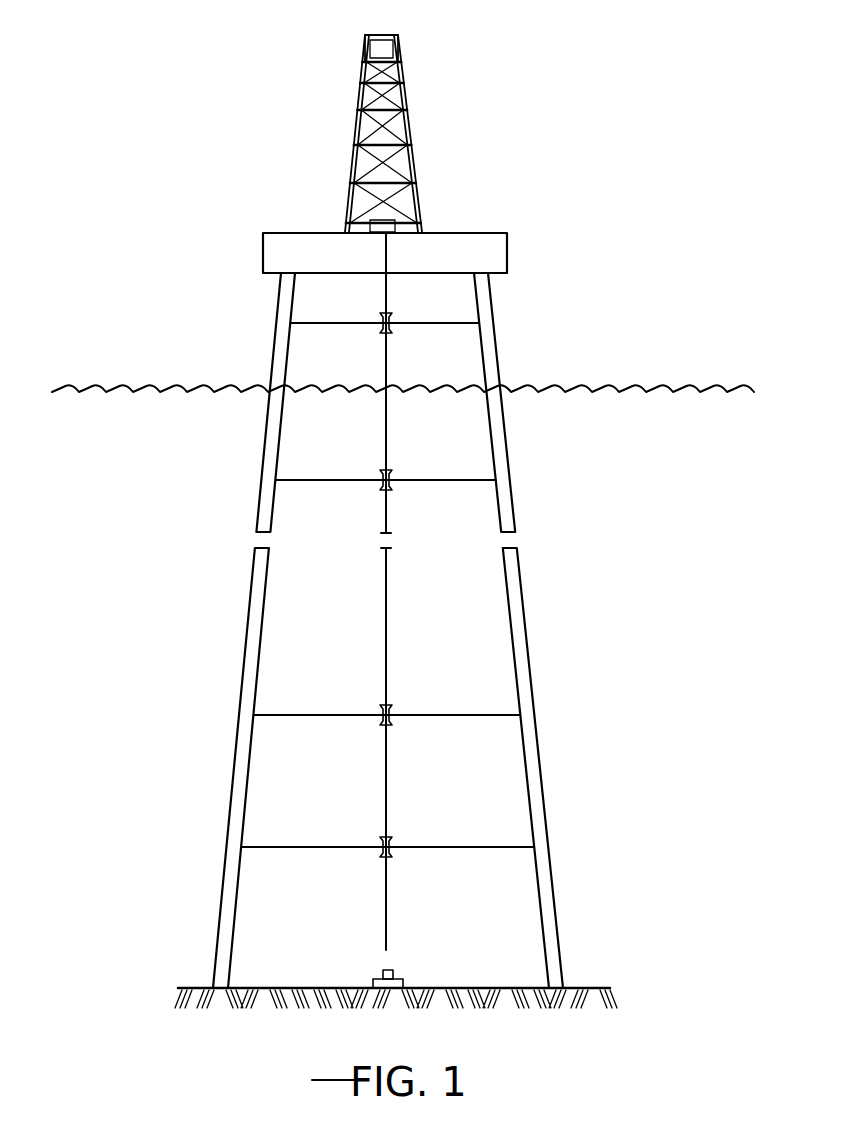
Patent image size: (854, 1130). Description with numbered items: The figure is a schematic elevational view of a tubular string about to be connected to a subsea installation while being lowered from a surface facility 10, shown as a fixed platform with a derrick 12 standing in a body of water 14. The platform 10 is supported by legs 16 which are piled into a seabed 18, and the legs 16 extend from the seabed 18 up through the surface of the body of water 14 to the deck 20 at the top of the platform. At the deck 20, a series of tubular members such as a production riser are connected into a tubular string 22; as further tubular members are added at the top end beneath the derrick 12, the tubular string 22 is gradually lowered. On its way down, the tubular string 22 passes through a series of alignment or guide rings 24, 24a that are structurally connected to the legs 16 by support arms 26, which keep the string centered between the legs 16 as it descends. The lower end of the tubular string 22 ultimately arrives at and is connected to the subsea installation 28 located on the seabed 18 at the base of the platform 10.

The surface facility 10 is at (552, 88).
The derrick 12 is at (408, 130).
The body of water 14 is at (612, 386).
The legs 16 is at (533, 762).
The seabed 18 is at (585, 988).
The deck 20 is at (501, 237).
The tubular string 22 is at (388, 437).
The guide rings 24 is at (392, 470).
The valve 24a is at (393, 840).
The support arms 26 is at (474, 484).
The subsea installation 28 is at (405, 980).